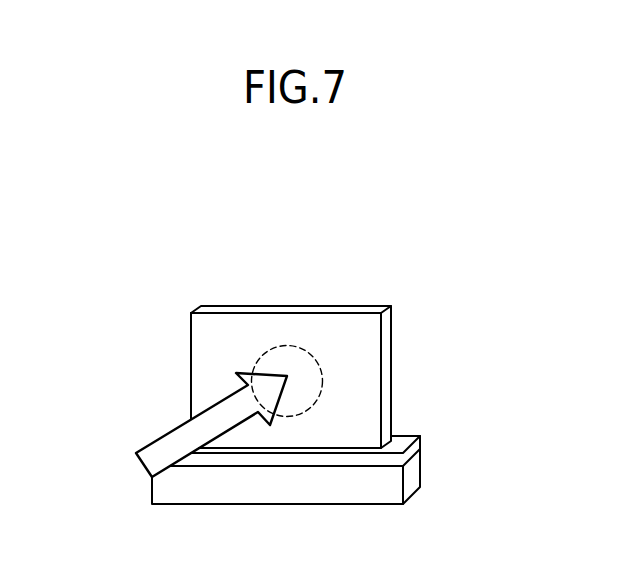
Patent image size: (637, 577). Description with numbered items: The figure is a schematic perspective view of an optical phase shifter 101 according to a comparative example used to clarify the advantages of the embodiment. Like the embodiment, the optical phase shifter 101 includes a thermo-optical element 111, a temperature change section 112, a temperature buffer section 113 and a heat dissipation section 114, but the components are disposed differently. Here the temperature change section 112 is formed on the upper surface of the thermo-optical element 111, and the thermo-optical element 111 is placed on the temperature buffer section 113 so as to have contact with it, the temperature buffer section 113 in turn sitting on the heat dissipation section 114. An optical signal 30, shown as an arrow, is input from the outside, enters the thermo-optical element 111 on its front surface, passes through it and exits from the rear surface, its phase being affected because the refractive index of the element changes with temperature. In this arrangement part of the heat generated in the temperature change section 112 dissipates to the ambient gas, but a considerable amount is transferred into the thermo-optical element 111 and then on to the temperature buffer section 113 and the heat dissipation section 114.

The optical phase shifter 101 is at (291, 218).
The optical signal 30 is at (183, 435).
The thermo-optical element 111 is at (367, 380).
The temperature change section 112 is at (362, 312).
The temperature buffer section 113 is at (315, 462).
The heat dissipation section 114 is at (377, 488).